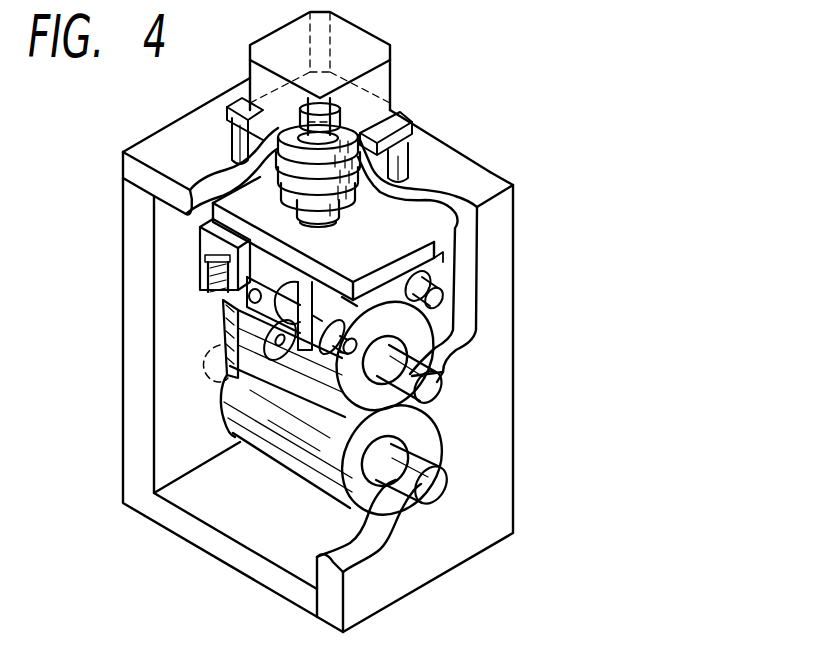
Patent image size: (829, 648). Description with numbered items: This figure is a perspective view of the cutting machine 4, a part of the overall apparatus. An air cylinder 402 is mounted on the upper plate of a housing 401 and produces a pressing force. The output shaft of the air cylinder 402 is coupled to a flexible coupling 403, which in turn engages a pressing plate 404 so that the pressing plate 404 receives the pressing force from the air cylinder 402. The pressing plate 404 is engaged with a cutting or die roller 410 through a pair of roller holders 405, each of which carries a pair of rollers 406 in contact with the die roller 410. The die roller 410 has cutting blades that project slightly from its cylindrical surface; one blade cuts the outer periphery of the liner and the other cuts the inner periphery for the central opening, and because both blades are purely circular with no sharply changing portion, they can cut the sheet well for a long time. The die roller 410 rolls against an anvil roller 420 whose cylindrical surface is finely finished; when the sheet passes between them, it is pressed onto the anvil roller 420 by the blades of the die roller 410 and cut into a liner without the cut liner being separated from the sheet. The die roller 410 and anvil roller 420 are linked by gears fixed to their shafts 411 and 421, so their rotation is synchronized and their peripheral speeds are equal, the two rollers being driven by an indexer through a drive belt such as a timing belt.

The cutting machine 4 is at (493, 108).
The housing 401 is at (503, 247).
The air cylinder 402 is at (367, 40).
The flexible coupling 403 is at (347, 130).
The pressing plate 404 is at (387, 238).
The roller holder 405 is at (203, 250).
The roller 406 is at (440, 283).
The die roller 410 is at (410, 333).
The shaft 411 is at (433, 390).
The anvil roller 420 is at (400, 420).
The shaft 421 is at (437, 493).